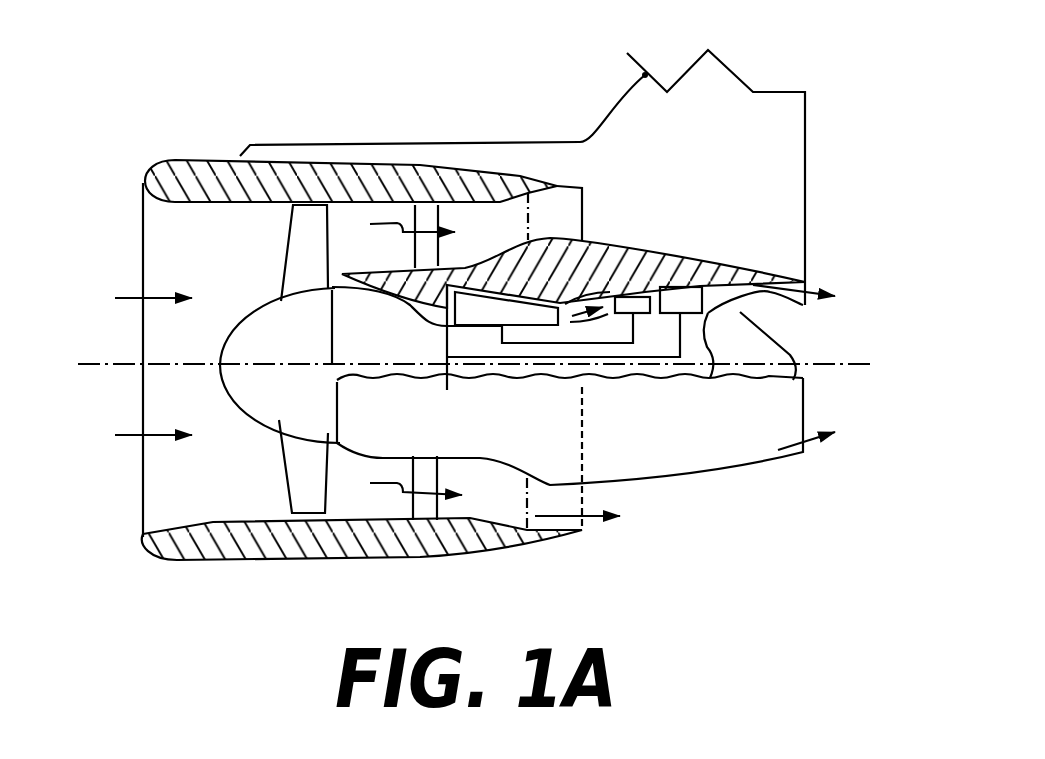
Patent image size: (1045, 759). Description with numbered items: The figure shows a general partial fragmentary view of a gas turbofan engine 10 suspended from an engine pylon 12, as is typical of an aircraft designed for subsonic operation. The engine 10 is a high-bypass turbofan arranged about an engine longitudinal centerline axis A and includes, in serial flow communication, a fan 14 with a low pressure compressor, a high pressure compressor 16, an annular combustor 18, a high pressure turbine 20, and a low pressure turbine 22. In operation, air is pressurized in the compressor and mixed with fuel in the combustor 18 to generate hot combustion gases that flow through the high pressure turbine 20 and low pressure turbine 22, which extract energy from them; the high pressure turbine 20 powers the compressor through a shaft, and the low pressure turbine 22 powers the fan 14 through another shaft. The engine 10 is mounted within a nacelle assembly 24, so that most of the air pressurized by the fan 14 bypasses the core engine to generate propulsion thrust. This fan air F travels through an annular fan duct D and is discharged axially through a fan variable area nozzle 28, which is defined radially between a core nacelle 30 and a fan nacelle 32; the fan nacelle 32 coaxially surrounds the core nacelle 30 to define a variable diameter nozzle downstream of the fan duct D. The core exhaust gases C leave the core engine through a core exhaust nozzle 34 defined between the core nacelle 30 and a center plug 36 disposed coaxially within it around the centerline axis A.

The gas turbofan engine 10 is at (178, 128).
The engine pylon 12 is at (712, 95).
The fan 14 is at (287, 473).
The high pressure compressor 16 is at (488, 317).
The annular combustor 18 is at (600, 315).
The high pressure turbine 20 is at (640, 313).
The low pressure turbine 22 is at (695, 313).
The nacelle assembly 24 is at (297, 580).
The fan variable area nozzle 28 is at (556, 185).
The core nacelle 30 is at (690, 263).
The fan nacelle 32 is at (348, 180).
The core exhaust nozzle 34 is at (805, 280).
The center plug 36 is at (760, 341).
The engine longitudinal centerline axis A is at (862, 368).
The core exhaust gases C is at (805, 452).
The annular fan duct D is at (396, 235).
The fan air F is at (401, 488).